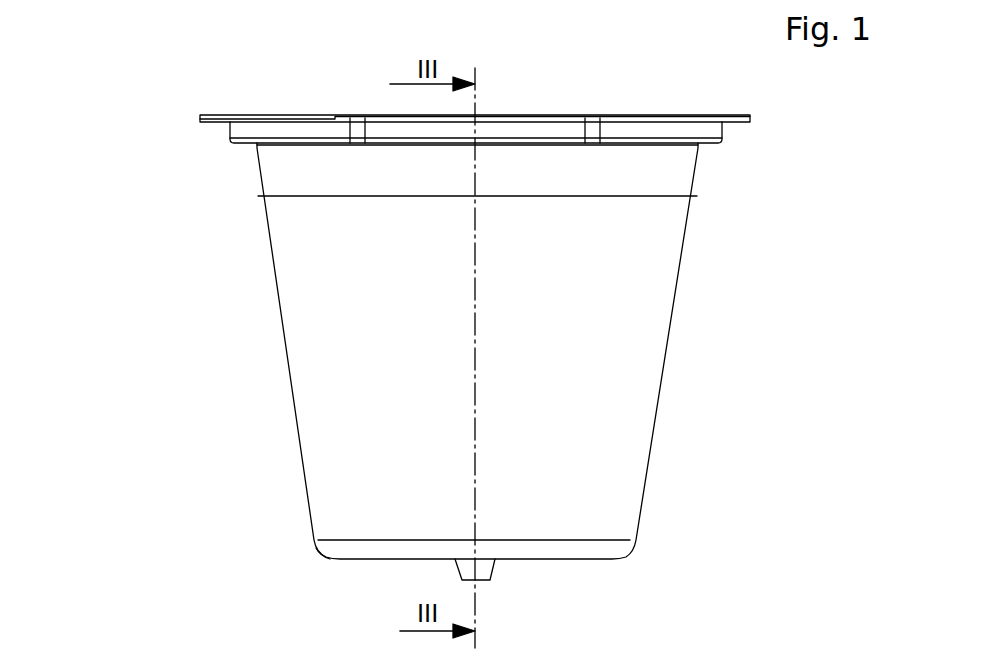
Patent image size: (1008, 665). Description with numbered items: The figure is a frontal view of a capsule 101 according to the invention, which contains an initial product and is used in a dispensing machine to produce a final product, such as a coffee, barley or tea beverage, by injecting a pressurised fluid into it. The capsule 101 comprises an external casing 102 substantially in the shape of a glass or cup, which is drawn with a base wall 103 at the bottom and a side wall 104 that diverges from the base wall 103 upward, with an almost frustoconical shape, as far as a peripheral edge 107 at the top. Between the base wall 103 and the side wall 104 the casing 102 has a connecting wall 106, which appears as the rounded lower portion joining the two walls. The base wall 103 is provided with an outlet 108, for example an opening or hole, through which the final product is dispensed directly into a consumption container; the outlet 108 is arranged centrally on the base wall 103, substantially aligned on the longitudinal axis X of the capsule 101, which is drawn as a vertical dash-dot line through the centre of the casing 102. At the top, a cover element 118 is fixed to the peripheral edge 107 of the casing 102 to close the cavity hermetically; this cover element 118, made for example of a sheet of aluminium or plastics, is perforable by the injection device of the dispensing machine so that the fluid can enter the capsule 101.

The capsule 101 is at (176, 60).
The external casing 102 is at (378, 390).
The base wall 103 is at (378, 560).
The side wall 104 is at (273, 265).
The connecting wall 106 is at (323, 552).
The peripheral edge 107 is at (215, 122).
The outlet 108 is at (490, 580).
The cover element 118 is at (698, 115).
The longitudinal axis X is at (475, 240).